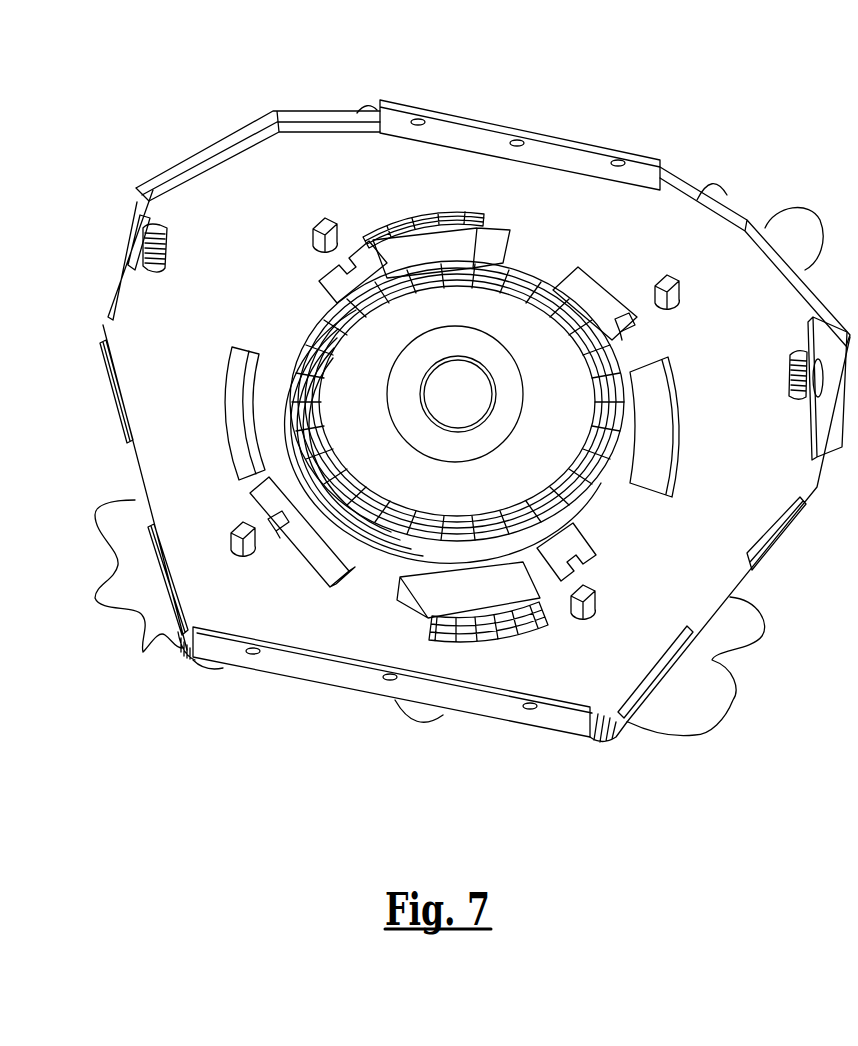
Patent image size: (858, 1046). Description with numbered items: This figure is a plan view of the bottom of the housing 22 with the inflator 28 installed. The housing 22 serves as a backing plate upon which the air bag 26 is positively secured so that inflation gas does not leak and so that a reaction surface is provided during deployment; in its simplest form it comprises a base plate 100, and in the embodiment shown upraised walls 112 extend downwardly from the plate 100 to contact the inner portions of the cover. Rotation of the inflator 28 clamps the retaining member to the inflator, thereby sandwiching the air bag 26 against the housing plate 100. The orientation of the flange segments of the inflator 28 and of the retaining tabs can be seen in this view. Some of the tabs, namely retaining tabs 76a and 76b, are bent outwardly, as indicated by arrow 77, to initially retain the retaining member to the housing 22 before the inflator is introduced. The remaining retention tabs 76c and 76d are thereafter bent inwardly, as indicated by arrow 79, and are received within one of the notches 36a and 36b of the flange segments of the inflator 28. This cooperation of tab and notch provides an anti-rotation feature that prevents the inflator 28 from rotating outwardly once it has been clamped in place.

The housing 22 is at (374, 169).
The air bag 26 is at (690, 725).
The inflator 28 is at (493, 320).
The notch of flange segment 36a is at (307, 547).
The notch of flange segment 36b is at (633, 325).
The retaining tab 76a is at (313, 250).
The retaining tab 76b is at (597, 612).
The retention tab 76c is at (247, 557).
The retention tab 76d is at (680, 303).
The arrow 77 is at (327, 210).
The arrow 79 is at (643, 287).
The base plate 100 is at (717, 248).
The upraised walls 112 is at (550, 152).